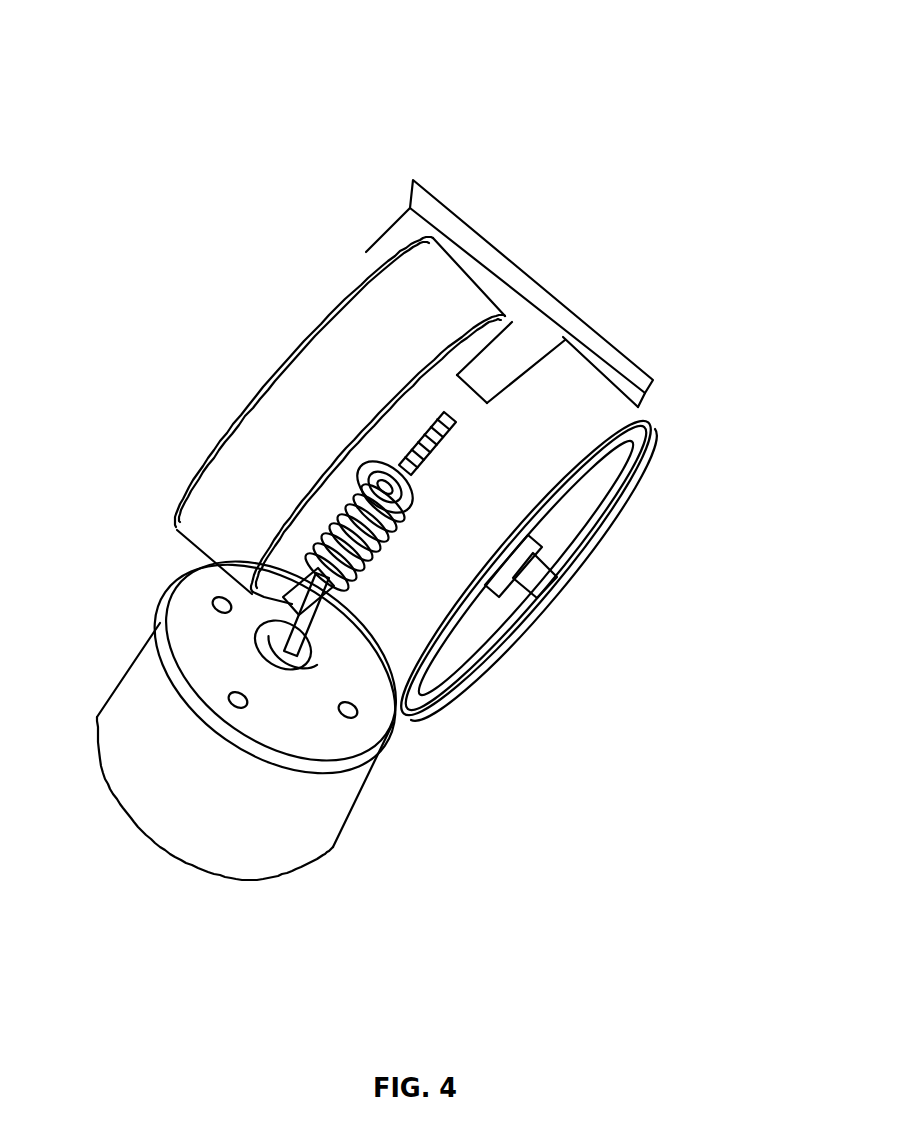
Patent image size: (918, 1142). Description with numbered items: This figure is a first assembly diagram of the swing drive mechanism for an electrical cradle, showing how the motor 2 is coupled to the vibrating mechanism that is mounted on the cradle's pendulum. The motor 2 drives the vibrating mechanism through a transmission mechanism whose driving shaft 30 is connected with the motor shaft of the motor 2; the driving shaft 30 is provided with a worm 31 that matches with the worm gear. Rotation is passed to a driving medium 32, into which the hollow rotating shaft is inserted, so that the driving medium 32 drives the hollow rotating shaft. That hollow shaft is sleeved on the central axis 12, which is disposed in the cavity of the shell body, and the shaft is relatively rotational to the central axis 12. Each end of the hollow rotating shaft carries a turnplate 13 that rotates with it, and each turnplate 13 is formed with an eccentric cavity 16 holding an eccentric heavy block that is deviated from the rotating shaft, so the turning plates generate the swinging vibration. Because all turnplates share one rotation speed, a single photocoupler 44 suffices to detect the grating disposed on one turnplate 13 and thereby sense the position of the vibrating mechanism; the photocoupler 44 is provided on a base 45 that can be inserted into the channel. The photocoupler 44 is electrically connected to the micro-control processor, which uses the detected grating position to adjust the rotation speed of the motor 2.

The motor 2 is at (374, 751).
The driving shaft 30 is at (176, 485).
The turnplate 13 is at (340, 324).
The worm 31 is at (222, 329).
The driving medium 32 is at (484, 259).
The photocoupler 44 is at (574, 225).
The base 45 is at (623, 218).
The central axis 12 is at (655, 496).
The eccentric cavity 16 is at (601, 586).